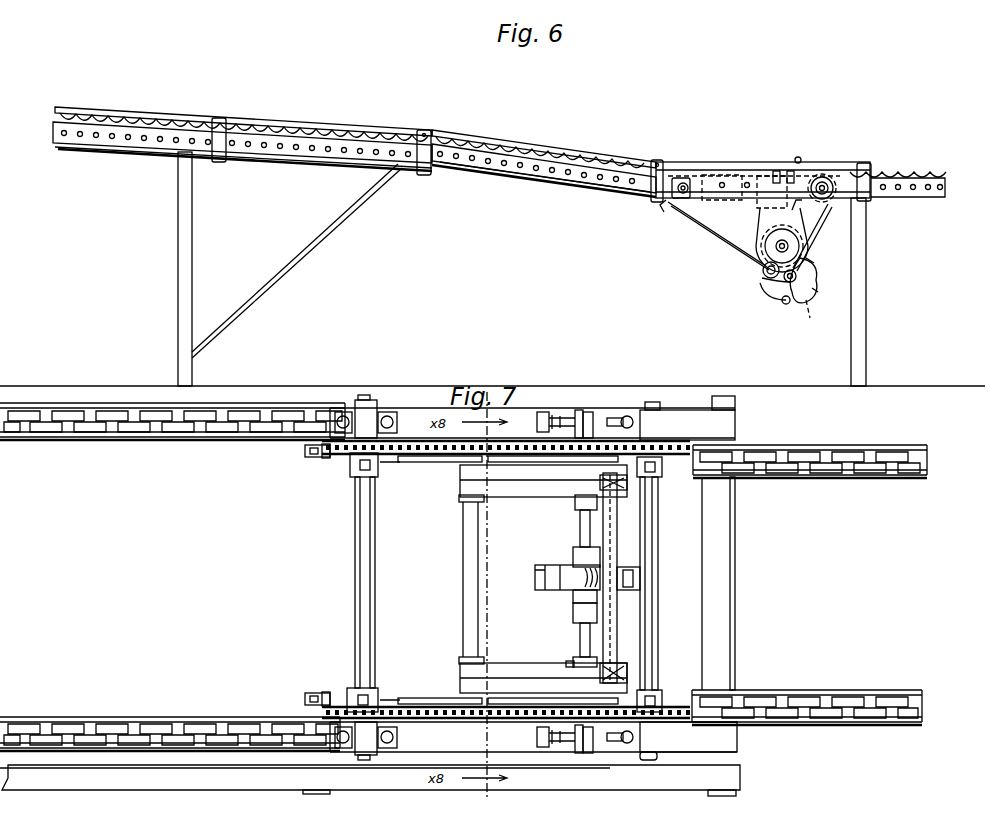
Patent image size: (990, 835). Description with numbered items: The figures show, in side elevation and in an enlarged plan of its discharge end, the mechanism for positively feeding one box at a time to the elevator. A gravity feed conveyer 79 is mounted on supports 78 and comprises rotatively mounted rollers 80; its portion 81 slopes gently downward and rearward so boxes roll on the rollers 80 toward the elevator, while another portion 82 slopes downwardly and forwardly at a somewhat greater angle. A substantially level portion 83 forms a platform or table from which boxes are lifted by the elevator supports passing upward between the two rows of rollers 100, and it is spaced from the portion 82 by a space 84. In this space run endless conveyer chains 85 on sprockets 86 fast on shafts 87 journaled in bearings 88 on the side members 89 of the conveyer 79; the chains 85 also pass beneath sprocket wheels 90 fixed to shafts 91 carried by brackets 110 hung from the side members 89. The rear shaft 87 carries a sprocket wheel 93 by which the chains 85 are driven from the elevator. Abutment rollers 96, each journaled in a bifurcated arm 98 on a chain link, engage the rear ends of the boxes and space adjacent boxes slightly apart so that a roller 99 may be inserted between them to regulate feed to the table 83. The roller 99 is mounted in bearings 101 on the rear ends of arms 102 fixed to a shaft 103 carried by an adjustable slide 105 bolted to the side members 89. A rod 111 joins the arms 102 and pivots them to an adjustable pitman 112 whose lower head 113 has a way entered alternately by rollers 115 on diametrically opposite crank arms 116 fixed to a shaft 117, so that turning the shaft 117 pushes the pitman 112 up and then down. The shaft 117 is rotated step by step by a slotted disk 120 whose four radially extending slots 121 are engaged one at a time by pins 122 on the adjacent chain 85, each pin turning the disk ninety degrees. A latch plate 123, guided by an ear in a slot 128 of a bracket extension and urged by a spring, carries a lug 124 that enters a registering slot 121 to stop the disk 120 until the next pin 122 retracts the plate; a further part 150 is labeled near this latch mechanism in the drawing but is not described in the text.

In FIG. 6, the supports 78 is at (178, 248).
In FIG. 6, the gravity feed conveyer 79 is at (156, 107).
In FIG. 6, the rollers 80 is at (333, 126).
In FIG. 7, the rollers 80 is at (150, 424).
In FIG. 6, the portion of the conveyer 81 is at (424, 130).
In FIG. 6, the portion of the conveyer 82 is at (606, 144).
In FIG. 7, the portion of the conveyer 82 is at (37, 397).
In FIG. 6, the portion of the conveyer 83 is at (918, 157).
In FIG. 7, the portion of the conveyer 83 is at (779, 449).
In FIG. 6, the space 84 is at (848, 152).
In FIG. 7, the space 84 is at (745, 779).
In FIG. 6, the endless conveyer chains 85 is at (730, 246).
In FIG. 7, the endless conveyer chains 85 is at (390, 462).
In FIG. 6, the sprockets 86 is at (692, 212).
In FIG. 7, the sprockets 86 is at (350, 477).
In FIG. 6, the shafts 87 is at (668, 201).
In FIG. 7, the shafts 87 is at (358, 541).
In FIG. 6, the bearings 88 is at (703, 178).
In FIG. 7, the bearings 88 is at (372, 400).
In FIG. 6, the side members 89 is at (497, 163).
In FIG. 7, the side members 89 is at (700, 415).
In FIG. 6, the sprocket wheels 90 is at (762, 240).
In FIG. 6, the shafts 91 is at (800, 247).
In FIG. 7, the shafts 91 is at (575, 662).
In FIG. 6, the sprocket wheel 93 is at (825, 178).
In FIG. 6, the rollers 96 is at (686, 180).
In FIG. 7, the rollers 96 is at (305, 449).
In FIG. 7, the bifurcated arm 98 is at (312, 458).
In FIG. 6, the roller 99 is at (799, 157).
In FIG. 7, the roller 99 is at (622, 520).
In FIG. 6, the rollers 100 is at (925, 173).
In FIG. 7, the rollers 100 is at (868, 461).
In FIG. 7, the bearings 101 is at (605, 478).
In FIG. 7, the arms 102 is at (557, 485).
In FIG. 7, the shaft 103 is at (463, 548).
In FIG. 6, the adjustable slide 105 is at (724, 170).
In FIG. 7, the adjustable slide 105 is at (445, 463).
In FIG. 6, the brackets 110 is at (762, 206).
In FIG. 7, the brackets 110 is at (537, 480).
In FIG. 7, the rod 111 is at (640, 582).
In FIG. 6, the adjustable pitman 112 is at (800, 200).
In FIG. 7, the adjustable pitman 112 is at (585, 606).
In FIG. 7, the head 113 is at (538, 592).
In FIG. 6, the rollers 115 is at (790, 302).
In FIG. 6, the crank arms 116 is at (782, 298).
In FIG. 7, the crank arms 116 is at (578, 597).
In FIG. 6, the shaft 117 is at (770, 288).
In FIG. 7, the shaft 117 is at (580, 542).
In FIG. 6, the disk 120 is at (818, 273).
In FIG. 6, the radially extending slots 121 is at (808, 306).
In FIG. 7, the pins 122 is at (597, 424).
In FIG. 6, the latch plate 123 is at (815, 262).
In FIG. 6, the lug 124 is at (818, 290).
In FIG. 6, the slot 128 is at (766, 268).
In FIG. 6, the bushing 150 is at (765, 275).